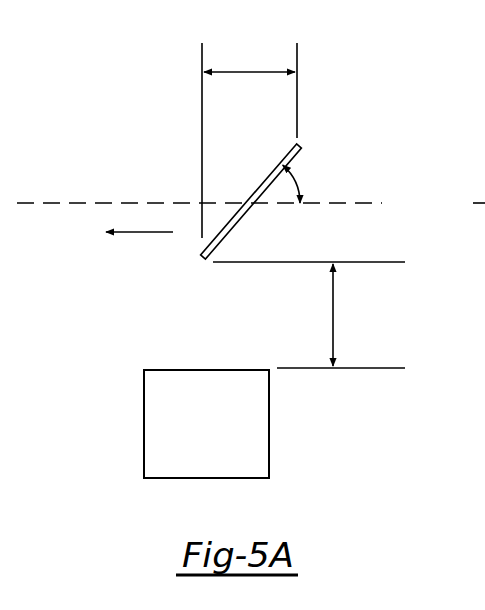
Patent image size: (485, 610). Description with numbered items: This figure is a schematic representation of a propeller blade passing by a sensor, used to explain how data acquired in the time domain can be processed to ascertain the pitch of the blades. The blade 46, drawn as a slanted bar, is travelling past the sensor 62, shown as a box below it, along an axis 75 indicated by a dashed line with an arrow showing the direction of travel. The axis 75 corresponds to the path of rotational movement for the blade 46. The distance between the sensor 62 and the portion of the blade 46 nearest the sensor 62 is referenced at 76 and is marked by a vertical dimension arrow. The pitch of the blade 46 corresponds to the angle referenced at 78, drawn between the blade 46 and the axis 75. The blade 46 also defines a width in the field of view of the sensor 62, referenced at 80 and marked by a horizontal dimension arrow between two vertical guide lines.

The blade 46 is at (300, 152).
The sensor 62 is at (245, 436).
The axis 75 is at (105, 203).
The distance 76 is at (334, 315).
The angle 78 is at (298, 170).
The width 80 is at (248, 72).